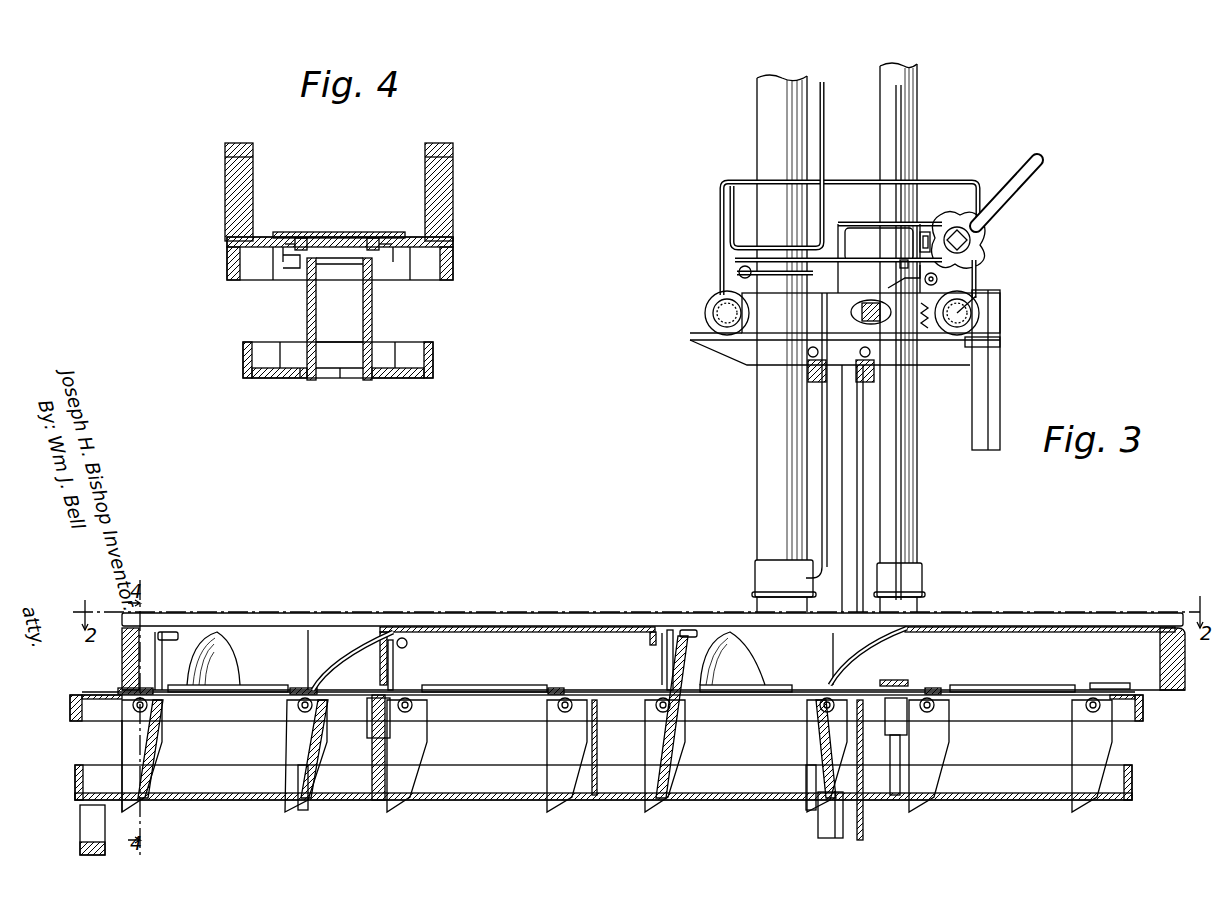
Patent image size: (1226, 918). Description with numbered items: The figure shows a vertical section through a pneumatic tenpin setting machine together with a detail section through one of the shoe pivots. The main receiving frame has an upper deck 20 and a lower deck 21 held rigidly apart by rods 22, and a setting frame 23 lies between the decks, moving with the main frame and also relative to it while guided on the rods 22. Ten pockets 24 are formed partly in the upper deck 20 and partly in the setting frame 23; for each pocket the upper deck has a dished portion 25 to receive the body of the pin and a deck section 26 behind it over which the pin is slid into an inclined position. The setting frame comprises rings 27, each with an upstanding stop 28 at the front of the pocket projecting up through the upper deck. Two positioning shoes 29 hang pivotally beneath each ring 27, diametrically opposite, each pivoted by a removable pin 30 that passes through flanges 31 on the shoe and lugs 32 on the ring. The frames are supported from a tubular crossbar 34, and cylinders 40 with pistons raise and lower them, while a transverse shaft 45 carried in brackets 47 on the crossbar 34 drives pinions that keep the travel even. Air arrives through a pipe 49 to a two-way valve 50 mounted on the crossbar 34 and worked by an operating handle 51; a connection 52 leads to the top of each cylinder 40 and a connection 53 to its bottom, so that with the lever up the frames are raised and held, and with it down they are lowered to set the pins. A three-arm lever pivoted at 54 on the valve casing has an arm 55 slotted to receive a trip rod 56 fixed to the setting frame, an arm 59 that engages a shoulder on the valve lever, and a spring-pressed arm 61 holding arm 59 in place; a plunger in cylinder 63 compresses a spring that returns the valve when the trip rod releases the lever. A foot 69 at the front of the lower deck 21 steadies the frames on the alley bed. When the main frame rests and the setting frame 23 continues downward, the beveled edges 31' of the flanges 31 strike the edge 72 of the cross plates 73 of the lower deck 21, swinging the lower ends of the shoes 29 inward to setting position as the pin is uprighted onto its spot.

In FIG. 4, the upper deck 20 is at (453, 200).
In FIG. 3, the upper deck 20 is at (1200, 655).
In FIG. 4, the lower deck 21 is at (433, 360).
In FIG. 3, the lower deck 21 is at (1134, 784).
In FIG. 3, the rods 22 is at (395, 668).
In FIG. 4, the setting frame 23 is at (455, 258).
In FIG. 3, the setting frame 23 is at (1145, 710).
In FIG. 3, the pockets 24 is at (258, 680).
In FIG. 3, the dished portion 25 is at (372, 665).
In FIG. 3, the deck section 26 is at (525, 625).
In FIG. 4, the rings 27 is at (336, 232).
In FIG. 3, the rings 27 is at (215, 695).
In FIG. 3, the upstanding stop 28 is at (165, 650).
In FIG. 3, the positioning shoes 29 is at (170, 752).
In FIG. 4, the pin 30 is at (340, 262).
In FIG. 3, the pin 30 is at (132, 706).
In FIG. 4, the flanges 31 is at (344, 319).
In FIG. 3, the flanges 31 is at (602, 756).
In FIG. 3, the beveled edges 31' is at (217, 772).
In FIG. 4, the lugs 32 is at (296, 238).
In FIG. 3, the lugs 32 is at (125, 690).
In FIG. 3, the crossbar 34 is at (704, 314).
In FIG. 3, the cylinders 40 is at (765, 138).
In FIG. 3, the transverse shaft 45 is at (852, 310).
In FIG. 3, the brackets 47 is at (738, 266).
In FIG. 3, the pipe 49 is at (977, 285).
In FIG. 3, the two-way valve 50 is at (972, 242).
In FIG. 3, the operating handle 51 is at (1040, 170).
In FIG. 3, the connection 52 is at (860, 186).
In FIG. 3, the connection 53 is at (858, 272).
In FIG. 3, the pivot 54 is at (938, 276).
In FIG. 3, the arm 55 is at (896, 288).
In FIG. 3, the trip rod 56 is at (902, 150).
In FIG. 3, the arm 59 is at (948, 212).
In FIG. 3, the arm 61 is at (924, 335).
In FIG. 3, the cylinder 63 is at (990, 385).
In FIG. 3, the foot 69 is at (80, 826).
In FIG. 4, the edge 72 is at (303, 378).
In FIG. 3, the edge 72 is at (128, 800).
In FIG. 4, the cross plates 73 is at (344, 378).
In FIG. 3, the cross plates 73 is at (84, 805).